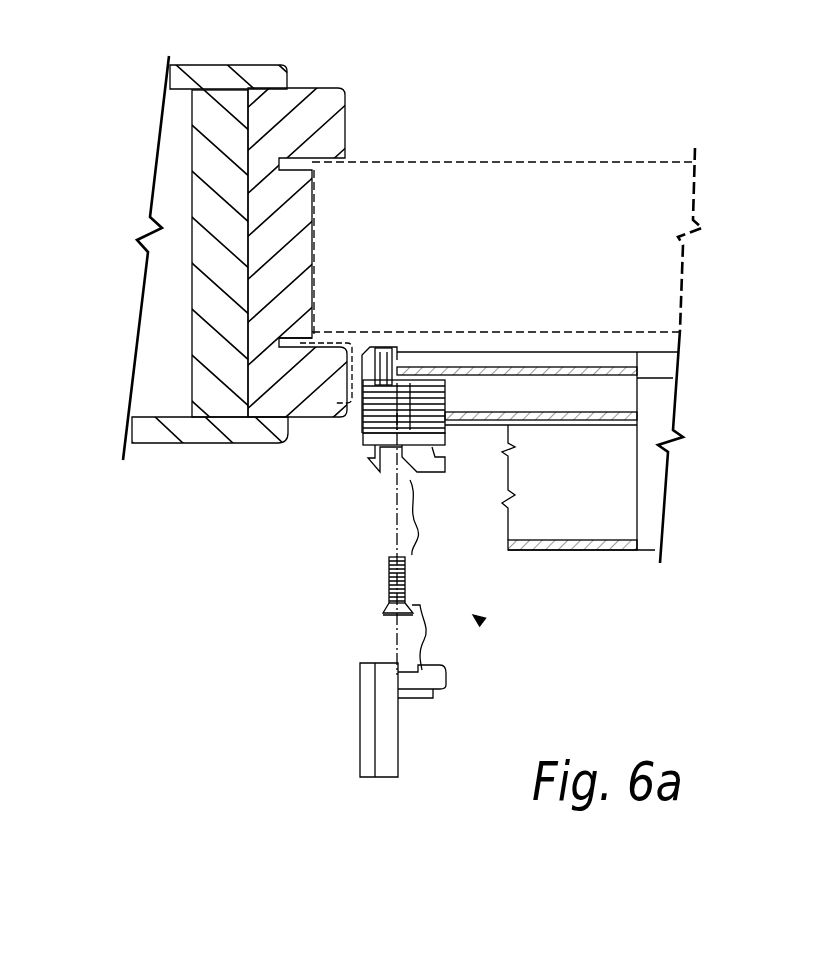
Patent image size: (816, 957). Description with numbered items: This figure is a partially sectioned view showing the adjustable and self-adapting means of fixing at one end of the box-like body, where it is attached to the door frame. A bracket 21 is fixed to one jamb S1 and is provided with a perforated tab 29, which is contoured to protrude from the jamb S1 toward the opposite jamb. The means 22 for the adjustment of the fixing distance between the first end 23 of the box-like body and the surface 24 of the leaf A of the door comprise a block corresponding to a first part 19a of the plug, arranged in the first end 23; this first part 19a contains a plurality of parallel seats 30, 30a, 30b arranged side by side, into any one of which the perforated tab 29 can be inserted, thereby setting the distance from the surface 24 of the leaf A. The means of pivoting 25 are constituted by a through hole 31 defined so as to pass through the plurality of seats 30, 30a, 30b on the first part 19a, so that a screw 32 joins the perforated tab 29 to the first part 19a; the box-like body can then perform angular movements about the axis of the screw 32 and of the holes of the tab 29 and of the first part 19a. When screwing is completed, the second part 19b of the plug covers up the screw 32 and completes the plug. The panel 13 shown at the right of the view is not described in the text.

The jamb S1 is at (318, 95).
The first part of the plug 19a is at (366, 340).
The second part of the plug 19b is at (385, 728).
The bracket 21 is at (337, 330).
The means for the adjustment of the fixing distance 22 is at (318, 440).
The first end of the box-like body 23 is at (418, 352).
The surface of the leaf 24 is at (587, 331).
The leaf A is at (528, 187).
The panel 13 is at (677, 407).
The tab 29 is at (447, 402).
The seat 30 is at (362, 428).
The seat 30a is at (287, 415).
The seat 30b is at (192, 413).
The through hole 31 is at (393, 485).
The screw 32 is at (388, 592).
The means of pivoting 25 is at (480, 621).